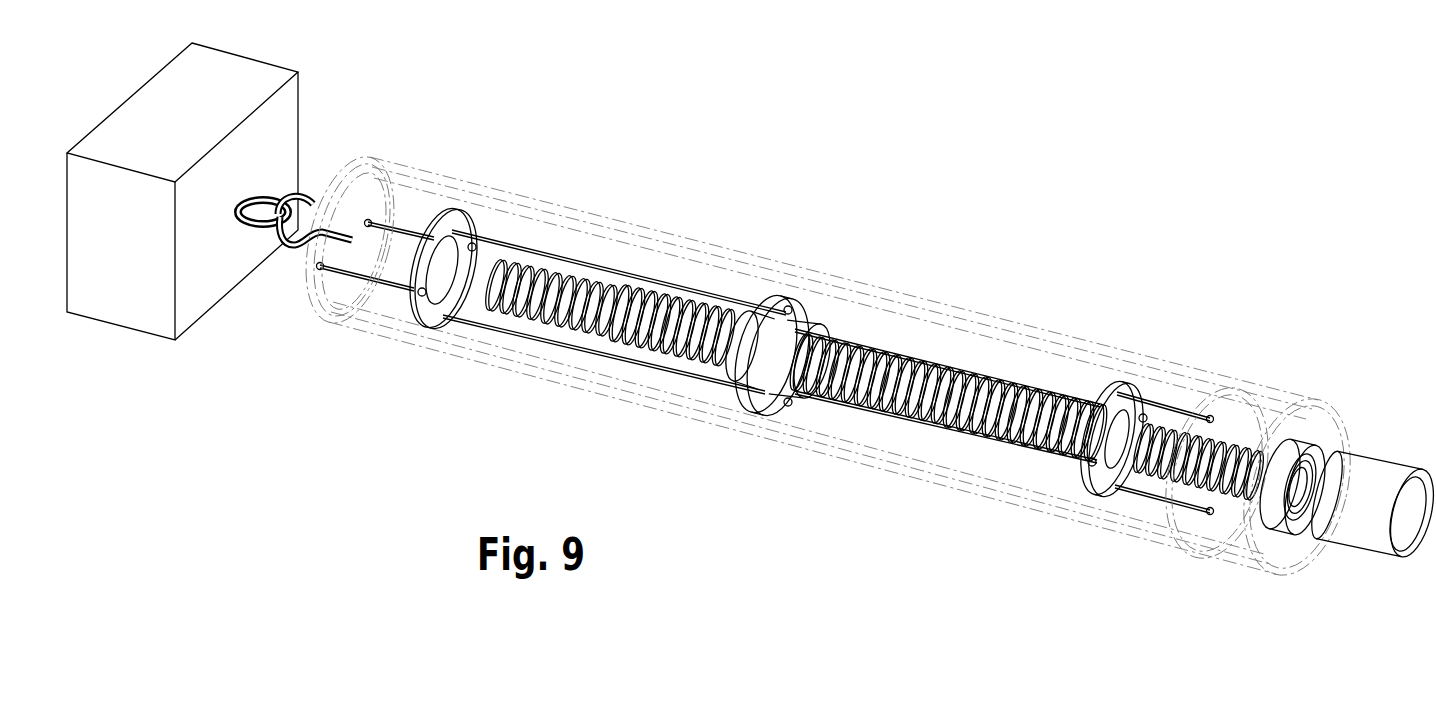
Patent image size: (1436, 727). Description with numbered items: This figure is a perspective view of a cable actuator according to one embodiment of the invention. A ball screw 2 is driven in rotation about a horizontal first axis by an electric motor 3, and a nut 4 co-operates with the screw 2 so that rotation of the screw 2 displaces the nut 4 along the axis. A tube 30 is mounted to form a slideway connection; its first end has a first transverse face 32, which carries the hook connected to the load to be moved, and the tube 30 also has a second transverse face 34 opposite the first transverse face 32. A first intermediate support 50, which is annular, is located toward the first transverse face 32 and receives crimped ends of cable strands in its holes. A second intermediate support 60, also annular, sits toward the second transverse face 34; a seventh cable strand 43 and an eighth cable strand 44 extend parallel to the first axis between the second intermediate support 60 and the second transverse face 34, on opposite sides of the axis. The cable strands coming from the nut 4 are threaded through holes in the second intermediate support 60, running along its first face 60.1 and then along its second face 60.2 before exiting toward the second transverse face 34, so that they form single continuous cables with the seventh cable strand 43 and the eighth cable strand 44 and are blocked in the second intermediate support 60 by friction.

The screw 2 is at (865, 347).
The electric motor 3 is at (1366, 543).
The nut 4 is at (800, 297).
The tube 30 is at (1005, 332).
The first transverse face 32 is at (338, 303).
The second transverse face 34 is at (1227, 408).
The seventh cable strand 43 is at (1173, 403).
The eighth cable strand 44 is at (1147, 497).
The first intermediate support 50 is at (480, 195).
The second intermediate support 60 is at (1058, 430).
The first face 60.1 is at (1102, 490).
The second face 60.2 is at (1083, 473).